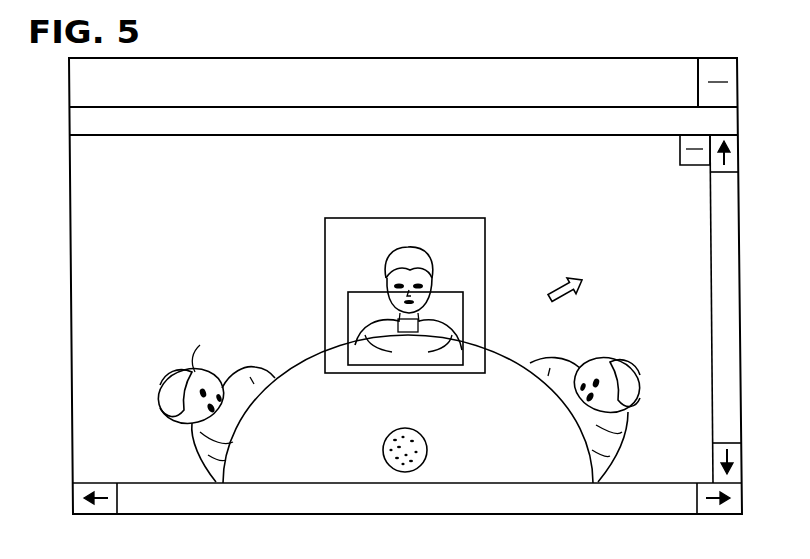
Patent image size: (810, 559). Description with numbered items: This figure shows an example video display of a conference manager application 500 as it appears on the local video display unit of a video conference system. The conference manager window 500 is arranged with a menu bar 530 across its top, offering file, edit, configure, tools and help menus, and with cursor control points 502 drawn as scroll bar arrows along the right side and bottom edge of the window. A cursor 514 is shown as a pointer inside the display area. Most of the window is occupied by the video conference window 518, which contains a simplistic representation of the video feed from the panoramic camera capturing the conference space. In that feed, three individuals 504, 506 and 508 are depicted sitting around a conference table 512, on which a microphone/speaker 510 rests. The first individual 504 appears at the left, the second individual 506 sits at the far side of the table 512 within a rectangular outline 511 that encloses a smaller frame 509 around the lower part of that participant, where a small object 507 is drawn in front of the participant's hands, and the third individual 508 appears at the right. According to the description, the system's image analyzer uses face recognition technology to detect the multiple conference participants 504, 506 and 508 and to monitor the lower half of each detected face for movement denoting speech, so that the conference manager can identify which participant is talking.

The conference manager application 500 is at (660, 58).
The menu bar 530 is at (70, 125).
The cursor control points 502 is at (735, 140).
The individual 504 is at (178, 368).
The individual 506 is at (400, 255).
The shared object 507 is at (408, 333).
The individual 508 is at (635, 362).
The video frame 509 is at (347, 303).
The microphone/speaker 510 is at (410, 428).
The video window 511 is at (458, 218).
The conference table 512 is at (498, 385).
The cursor 514 is at (553, 292).
The video conference window 518 is at (643, 209).